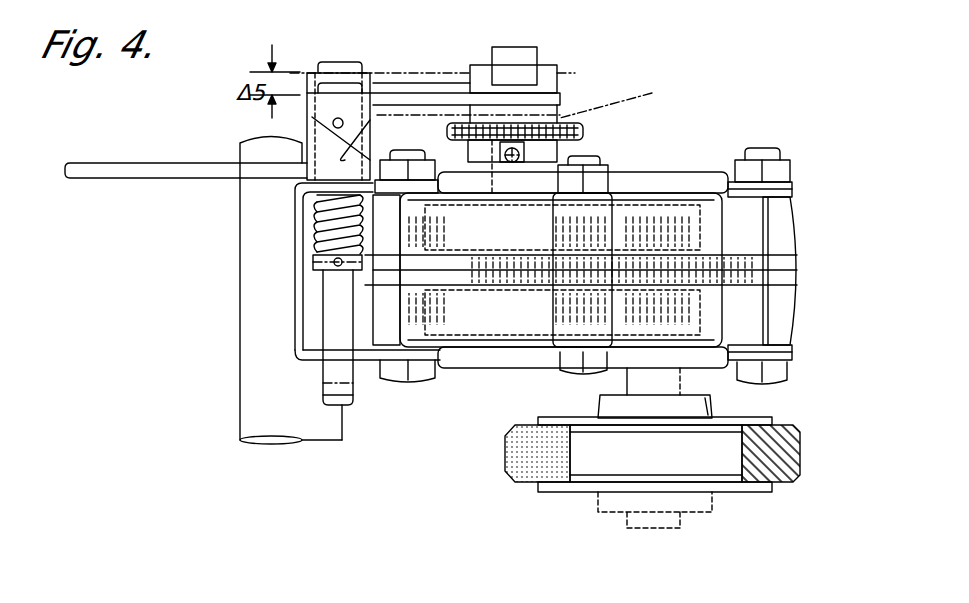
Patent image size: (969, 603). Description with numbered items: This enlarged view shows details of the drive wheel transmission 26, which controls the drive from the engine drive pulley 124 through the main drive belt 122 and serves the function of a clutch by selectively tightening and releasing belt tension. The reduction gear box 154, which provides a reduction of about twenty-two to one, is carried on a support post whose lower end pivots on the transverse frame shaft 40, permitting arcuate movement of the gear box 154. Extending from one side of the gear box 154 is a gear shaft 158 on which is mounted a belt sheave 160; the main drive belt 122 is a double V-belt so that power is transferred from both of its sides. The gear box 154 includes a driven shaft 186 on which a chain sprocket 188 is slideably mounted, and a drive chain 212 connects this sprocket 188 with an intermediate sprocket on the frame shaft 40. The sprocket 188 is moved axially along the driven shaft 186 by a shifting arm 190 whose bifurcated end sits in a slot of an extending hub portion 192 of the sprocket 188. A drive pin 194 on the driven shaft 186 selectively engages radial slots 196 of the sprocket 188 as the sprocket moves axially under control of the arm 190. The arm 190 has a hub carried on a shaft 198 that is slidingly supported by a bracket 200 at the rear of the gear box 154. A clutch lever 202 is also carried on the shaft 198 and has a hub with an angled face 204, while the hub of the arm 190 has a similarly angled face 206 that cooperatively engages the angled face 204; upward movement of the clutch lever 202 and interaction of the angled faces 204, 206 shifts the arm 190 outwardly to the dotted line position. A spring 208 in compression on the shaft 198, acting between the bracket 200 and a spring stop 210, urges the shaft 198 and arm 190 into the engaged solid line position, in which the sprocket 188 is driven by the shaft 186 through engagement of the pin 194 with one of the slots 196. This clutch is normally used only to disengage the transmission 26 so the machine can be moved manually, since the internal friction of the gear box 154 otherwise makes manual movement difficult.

The transmission 26 is at (682, 133).
The transverse shaft 40 is at (240, 392).
The main drive belt 122 is at (800, 450).
The engine drive pulley 124 is at (712, 505).
The reduction gear box 154 is at (865, 198).
The gear shaft 158 is at (670, 387).
The belt sheave 160 is at (552, 490).
The driven shaft 186 is at (523, 53).
The chain sprocket 188 is at (650, 143).
The shifting arm 190 is at (420, 95).
The hub portion 192 is at (580, 112).
The drive pin 194 is at (512, 163).
The radial slots 196 is at (486, 152).
The shaft 198 is at (333, 312).
The bracket 200 is at (367, 360).
The clutch lever 202 is at (150, 197).
The angled face 204 is at (307, 127).
The angled face 206 is at (362, 142).
The spring 208 is at (317, 233).
The spring stop 210 is at (313, 262).
The drive chain 212 is at (655, 90).